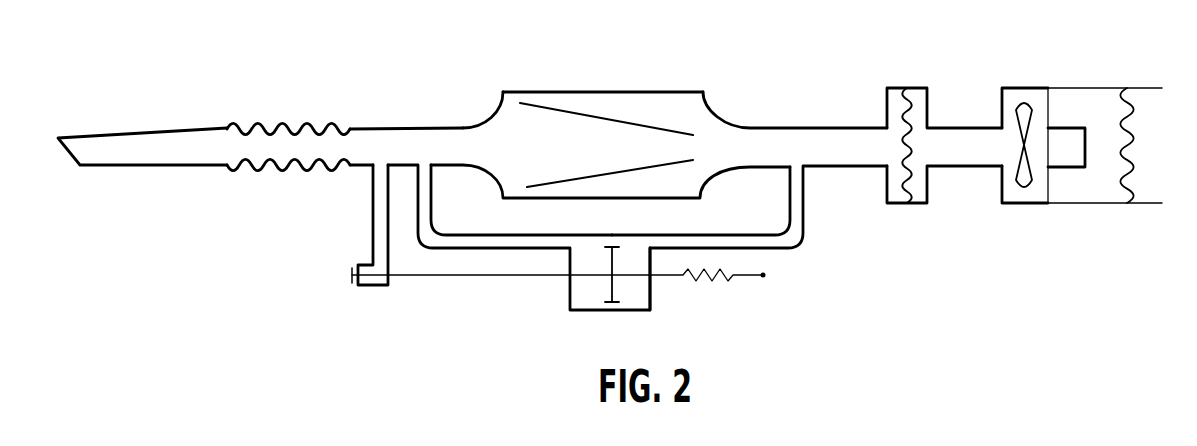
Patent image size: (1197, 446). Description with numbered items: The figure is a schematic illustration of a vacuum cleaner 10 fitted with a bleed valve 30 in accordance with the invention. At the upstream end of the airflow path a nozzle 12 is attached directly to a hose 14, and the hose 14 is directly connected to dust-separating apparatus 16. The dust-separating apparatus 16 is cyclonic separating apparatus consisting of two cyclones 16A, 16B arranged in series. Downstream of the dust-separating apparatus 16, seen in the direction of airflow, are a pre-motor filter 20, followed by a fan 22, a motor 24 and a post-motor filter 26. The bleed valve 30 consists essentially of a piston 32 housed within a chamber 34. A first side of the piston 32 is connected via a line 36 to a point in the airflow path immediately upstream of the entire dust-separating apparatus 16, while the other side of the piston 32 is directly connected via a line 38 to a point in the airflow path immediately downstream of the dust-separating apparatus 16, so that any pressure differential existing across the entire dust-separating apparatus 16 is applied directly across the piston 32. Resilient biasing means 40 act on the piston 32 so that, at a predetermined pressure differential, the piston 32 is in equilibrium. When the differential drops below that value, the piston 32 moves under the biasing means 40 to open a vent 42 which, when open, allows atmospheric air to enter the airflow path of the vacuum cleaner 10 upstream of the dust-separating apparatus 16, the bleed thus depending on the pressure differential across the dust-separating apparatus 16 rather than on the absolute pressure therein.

The vacuum cleaner 10 is at (330, 105).
The nozzle 12 is at (178, 167).
The hose 14 is at (320, 170).
The dust-separating apparatus 16 is at (695, 88).
The cyclone 16A is at (617, 110).
The downstream cyclone 16B is at (552, 108).
The pre-motor filter 20 is at (912, 96).
The fan 22 is at (1032, 113).
The motor 24 is at (1070, 158).
The post-motor filter 26 is at (1140, 120).
The bleed valve 30 is at (527, 287).
The piston 32 is at (615, 287).
The chamber 34 is at (652, 287).
The line 36 is at (477, 240).
The line 38 is at (718, 230).
The resilient biasing means 40 is at (713, 282).
The vent 42 is at (368, 290).